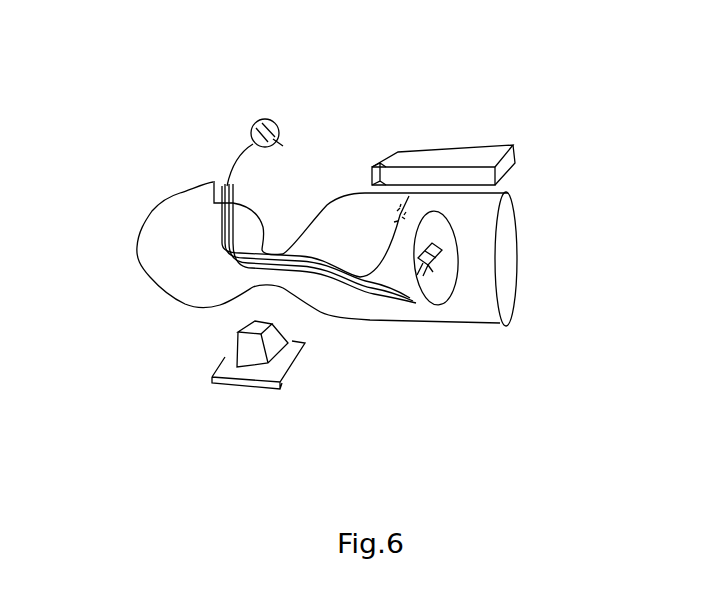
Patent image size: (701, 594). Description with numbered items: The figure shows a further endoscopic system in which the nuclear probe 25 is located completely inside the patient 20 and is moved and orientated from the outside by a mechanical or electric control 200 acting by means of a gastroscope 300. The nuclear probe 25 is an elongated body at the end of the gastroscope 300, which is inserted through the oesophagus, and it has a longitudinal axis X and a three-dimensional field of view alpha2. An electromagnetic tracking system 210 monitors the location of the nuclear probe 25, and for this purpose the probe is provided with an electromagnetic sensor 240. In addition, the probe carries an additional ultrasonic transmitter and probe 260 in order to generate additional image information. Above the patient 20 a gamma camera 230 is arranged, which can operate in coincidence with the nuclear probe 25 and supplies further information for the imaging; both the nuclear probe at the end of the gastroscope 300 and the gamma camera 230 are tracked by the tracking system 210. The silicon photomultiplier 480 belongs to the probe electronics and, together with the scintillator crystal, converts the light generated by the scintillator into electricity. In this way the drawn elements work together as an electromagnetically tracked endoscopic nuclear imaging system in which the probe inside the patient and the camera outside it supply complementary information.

The patient 20 is at (165, 308).
The nuclear probe 25 is at (432, 268).
The mechanical or electric control 200 is at (263, 116).
The electromagnetic tracking system 210 is at (233, 391).
The gamma camera 230 is at (477, 144).
The electromagnetic sensor 240 is at (442, 257).
The ultrasonic transmitter and probe 260 is at (417, 276).
The gastroscope 300 is at (218, 259).
The silicon photomultiplier 480 is at (373, 165).
The longitudinal axis X is at (417, 238).
The three-dimensional field of view alpha2 is at (417, 238).